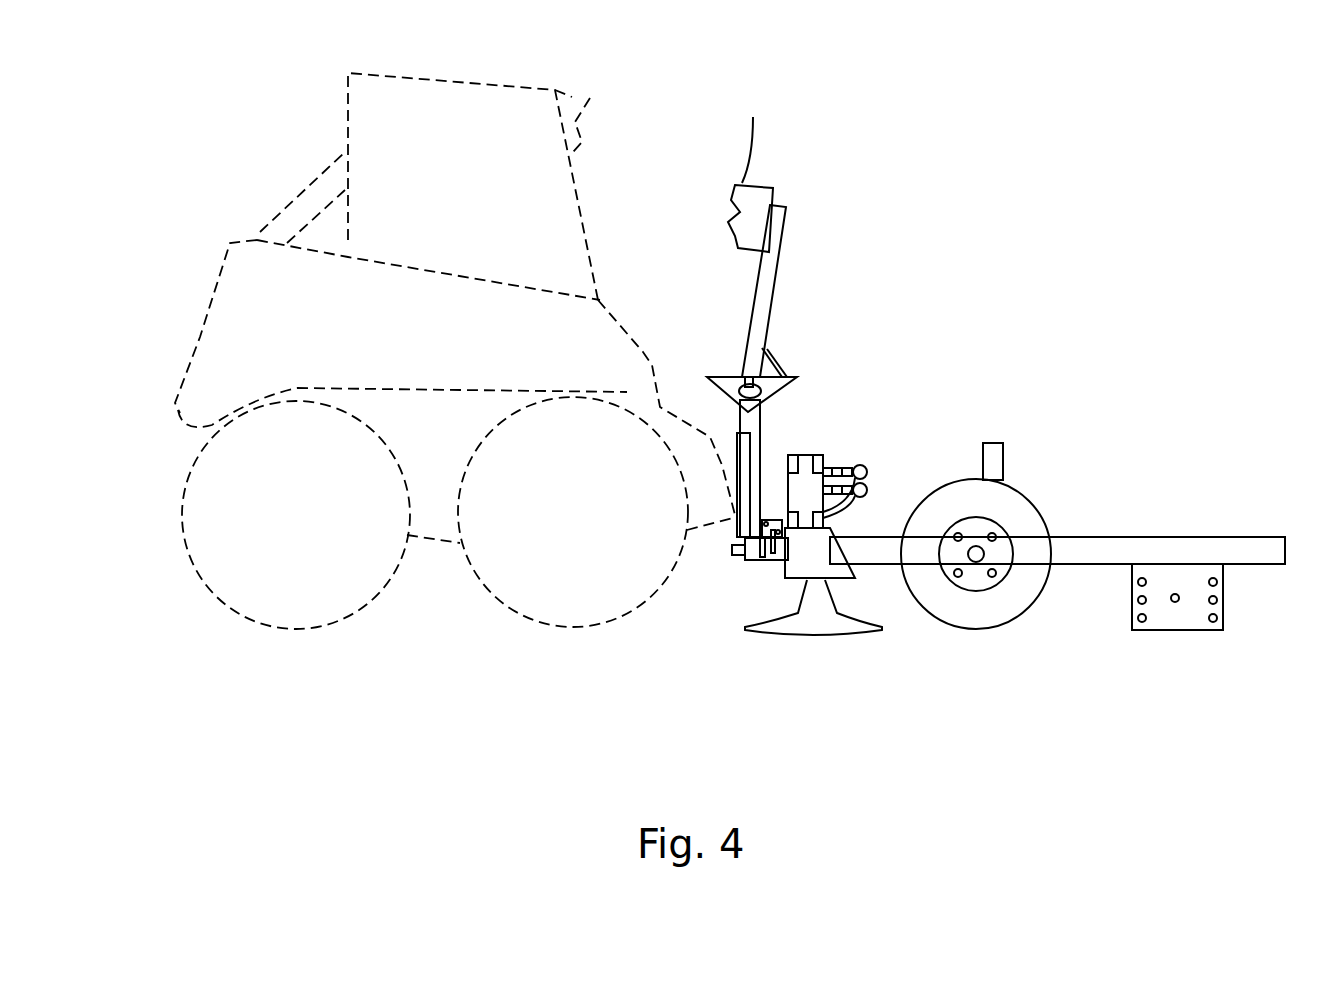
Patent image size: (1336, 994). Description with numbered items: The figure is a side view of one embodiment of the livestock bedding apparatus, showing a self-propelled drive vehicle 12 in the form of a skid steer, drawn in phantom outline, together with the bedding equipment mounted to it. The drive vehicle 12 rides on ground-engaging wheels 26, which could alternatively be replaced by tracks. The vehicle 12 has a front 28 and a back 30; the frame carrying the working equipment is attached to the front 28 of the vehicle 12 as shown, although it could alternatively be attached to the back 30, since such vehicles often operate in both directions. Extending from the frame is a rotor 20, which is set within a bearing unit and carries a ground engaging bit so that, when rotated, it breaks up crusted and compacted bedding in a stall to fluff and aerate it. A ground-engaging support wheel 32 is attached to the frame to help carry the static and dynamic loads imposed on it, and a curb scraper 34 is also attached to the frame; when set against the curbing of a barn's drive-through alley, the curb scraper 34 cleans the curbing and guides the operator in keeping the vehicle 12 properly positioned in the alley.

The drive vehicle 12 is at (612, 168).
The rotor 20 is at (833, 644).
The ground-engaging wheels 26 is at (557, 678).
The front 28 is at (665, 348).
The back 30 is at (178, 333).
The ground-engaging support wheel 32 is at (1023, 493).
The curb scraper 34 is at (1225, 607).